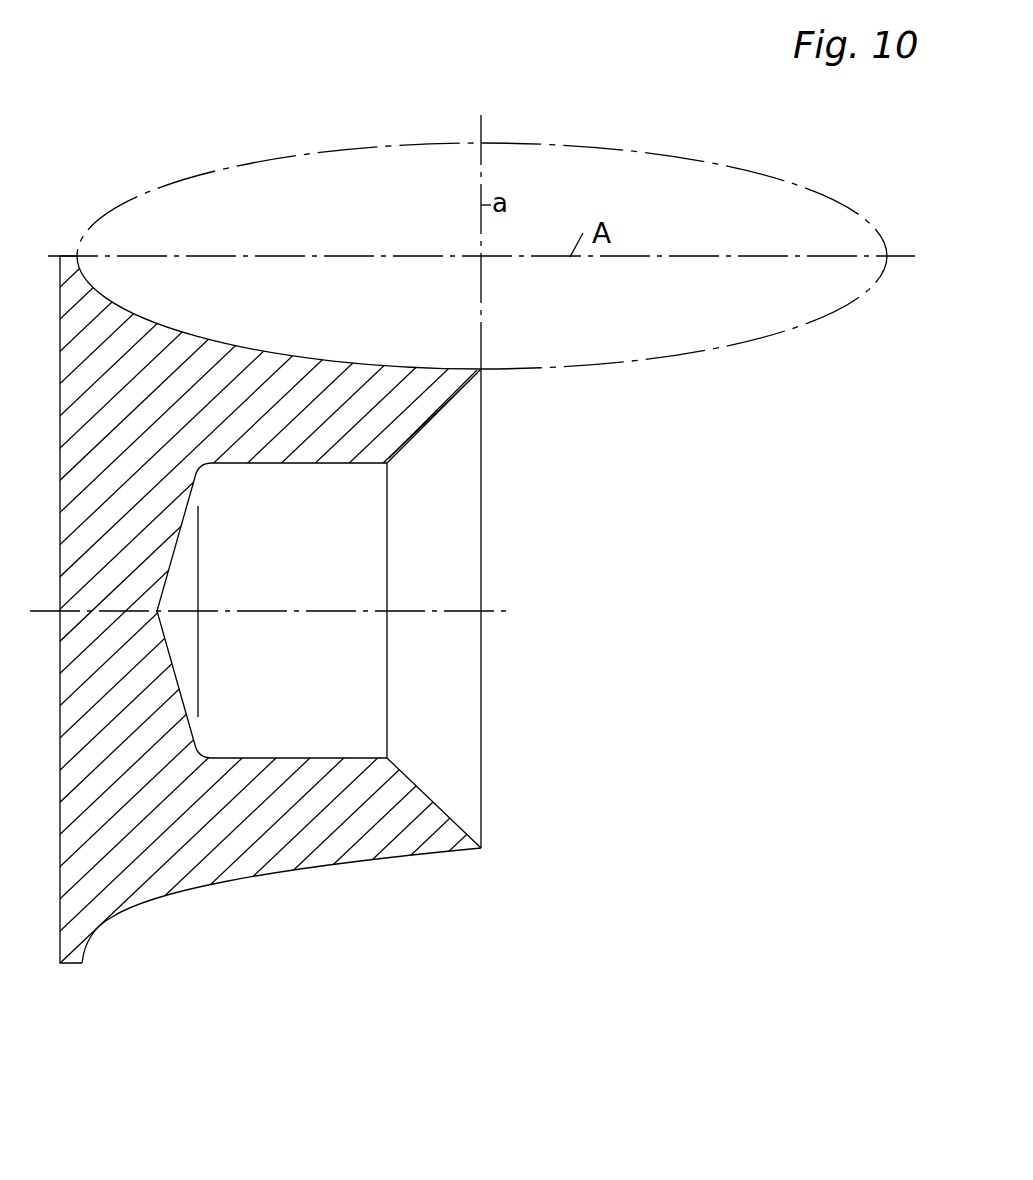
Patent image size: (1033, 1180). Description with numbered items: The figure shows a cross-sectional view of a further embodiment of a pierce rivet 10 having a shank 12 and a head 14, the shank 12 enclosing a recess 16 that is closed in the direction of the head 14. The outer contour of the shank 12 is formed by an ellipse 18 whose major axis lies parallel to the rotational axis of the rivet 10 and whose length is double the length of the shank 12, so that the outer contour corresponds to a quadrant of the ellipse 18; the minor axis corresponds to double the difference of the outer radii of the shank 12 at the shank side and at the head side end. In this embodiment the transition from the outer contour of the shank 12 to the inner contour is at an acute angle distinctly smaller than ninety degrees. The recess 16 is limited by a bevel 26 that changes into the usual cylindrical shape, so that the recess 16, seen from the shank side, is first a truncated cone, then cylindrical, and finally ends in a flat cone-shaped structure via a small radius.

The pierce rivet 10 is at (548, 555).
The shank 12 is at (323, 847).
The head 14 is at (72, 968).
The recess 16 is at (363, 690).
The ellipse 18 is at (690, 357).
The bevel 26 is at (440, 810).